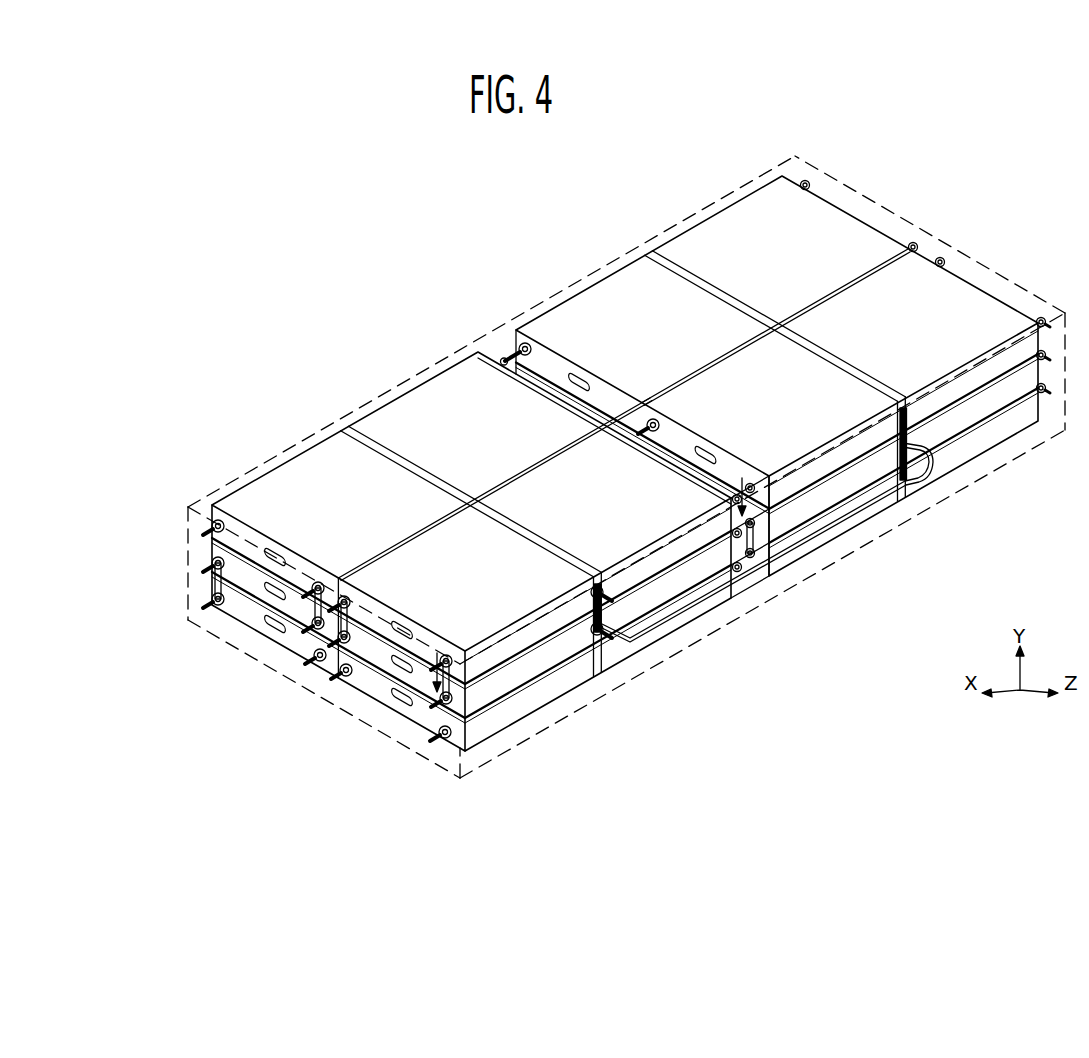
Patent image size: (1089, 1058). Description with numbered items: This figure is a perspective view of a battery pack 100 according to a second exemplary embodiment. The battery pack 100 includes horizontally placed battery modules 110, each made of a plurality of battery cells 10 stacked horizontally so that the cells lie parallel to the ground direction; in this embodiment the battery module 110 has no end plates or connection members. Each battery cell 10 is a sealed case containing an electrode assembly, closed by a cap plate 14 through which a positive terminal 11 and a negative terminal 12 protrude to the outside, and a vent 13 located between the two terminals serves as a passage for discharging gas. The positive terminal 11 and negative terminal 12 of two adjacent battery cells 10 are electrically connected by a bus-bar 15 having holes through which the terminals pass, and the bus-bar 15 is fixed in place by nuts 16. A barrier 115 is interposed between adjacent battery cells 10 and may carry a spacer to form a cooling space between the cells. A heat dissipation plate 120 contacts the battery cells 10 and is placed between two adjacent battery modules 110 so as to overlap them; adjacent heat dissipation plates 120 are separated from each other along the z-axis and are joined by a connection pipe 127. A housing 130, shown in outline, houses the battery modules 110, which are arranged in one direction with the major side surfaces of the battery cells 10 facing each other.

The battery pack 100 is at (281, 256).
The battery cell 10 is at (212, 510).
The positive terminal 11 is at (337, 673).
The negative terminal 12 is at (437, 737).
The vent 13 is at (403, 700).
The cap plate 14 is at (373, 683).
The bus-bar 15 is at (310, 612).
The nut 16 is at (220, 613).
The battery module 110 is at (873, 224).
The barrier 115 is at (517, 697).
The heat dissipation plate 120 is at (922, 441).
The connection pipe 127 is at (787, 552).
The housing 130 is at (663, 232).